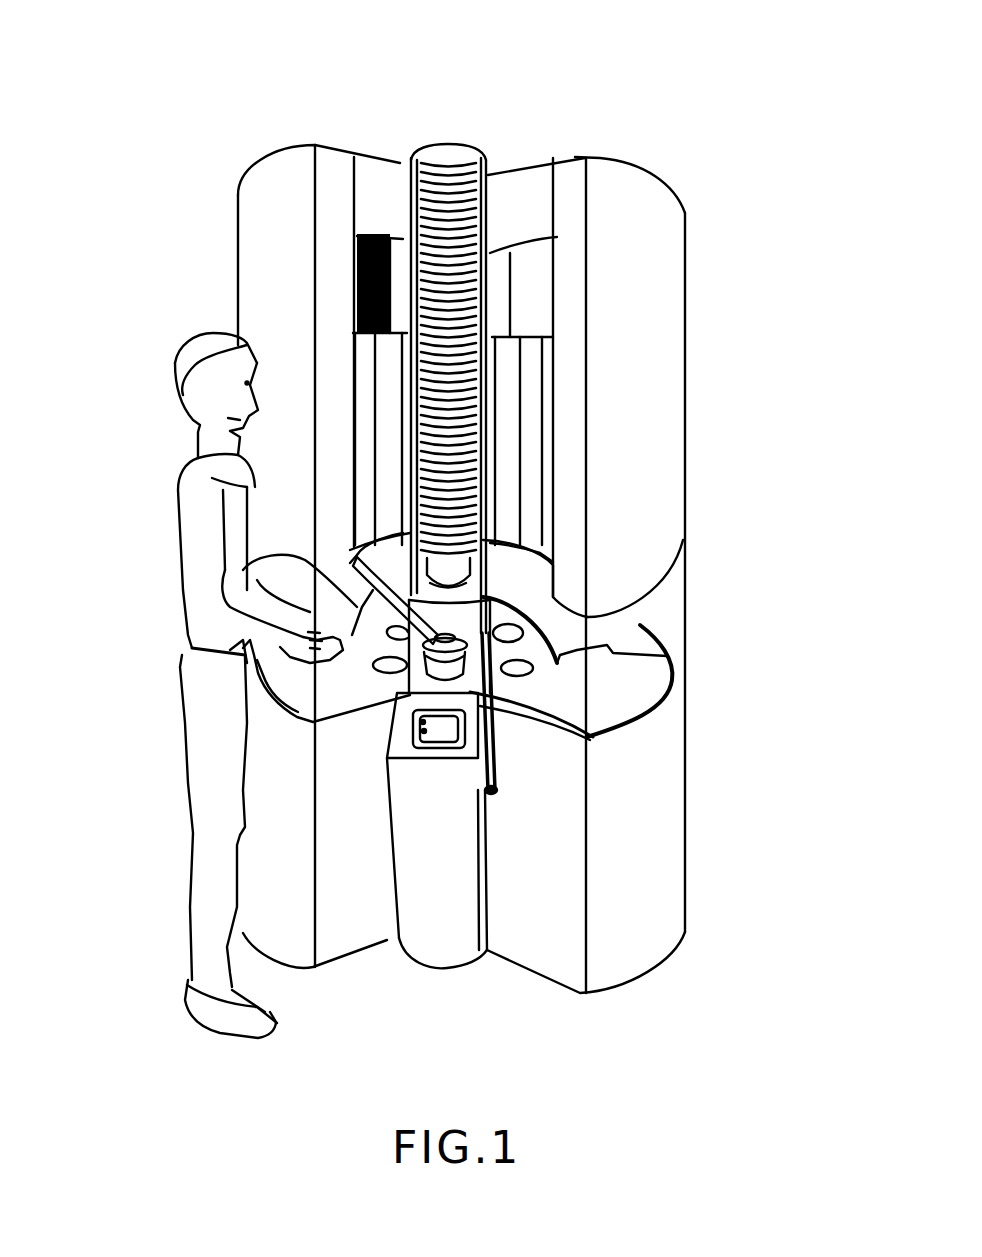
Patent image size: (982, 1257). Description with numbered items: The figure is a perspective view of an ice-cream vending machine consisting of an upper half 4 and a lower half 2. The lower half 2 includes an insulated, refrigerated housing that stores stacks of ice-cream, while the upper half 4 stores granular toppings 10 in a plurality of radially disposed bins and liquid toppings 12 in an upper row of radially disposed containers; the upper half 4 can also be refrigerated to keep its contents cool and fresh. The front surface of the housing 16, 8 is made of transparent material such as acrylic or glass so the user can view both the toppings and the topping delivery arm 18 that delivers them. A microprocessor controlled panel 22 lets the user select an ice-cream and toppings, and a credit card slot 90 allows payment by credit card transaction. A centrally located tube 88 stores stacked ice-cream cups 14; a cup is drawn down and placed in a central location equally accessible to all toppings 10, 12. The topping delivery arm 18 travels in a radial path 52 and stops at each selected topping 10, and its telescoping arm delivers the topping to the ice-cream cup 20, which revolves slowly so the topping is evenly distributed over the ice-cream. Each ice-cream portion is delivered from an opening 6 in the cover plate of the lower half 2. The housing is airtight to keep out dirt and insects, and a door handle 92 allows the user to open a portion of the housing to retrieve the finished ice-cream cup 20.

The lower half 2 is at (165, 630).
The upper half 4 is at (150, 540).
The opening 6 is at (494, 672).
The front surface of the housing 8 is at (667, 618).
The granular toppings 10 is at (520, 417).
The liquid toppings 12 is at (363, 283).
The ice-cream cups 14 is at (432, 197).
The front surface of the housing 16 is at (453, 143).
The topping delivery arm 18 is at (350, 568).
The ice-cream cup 20 is at (495, 720).
The microprocessor controlled panel 22 is at (483, 797).
The radial path 52 is at (667, 656).
The tube 88 is at (483, 500).
The credit card slot 90 is at (497, 758).
The door handle 92 is at (587, 735).